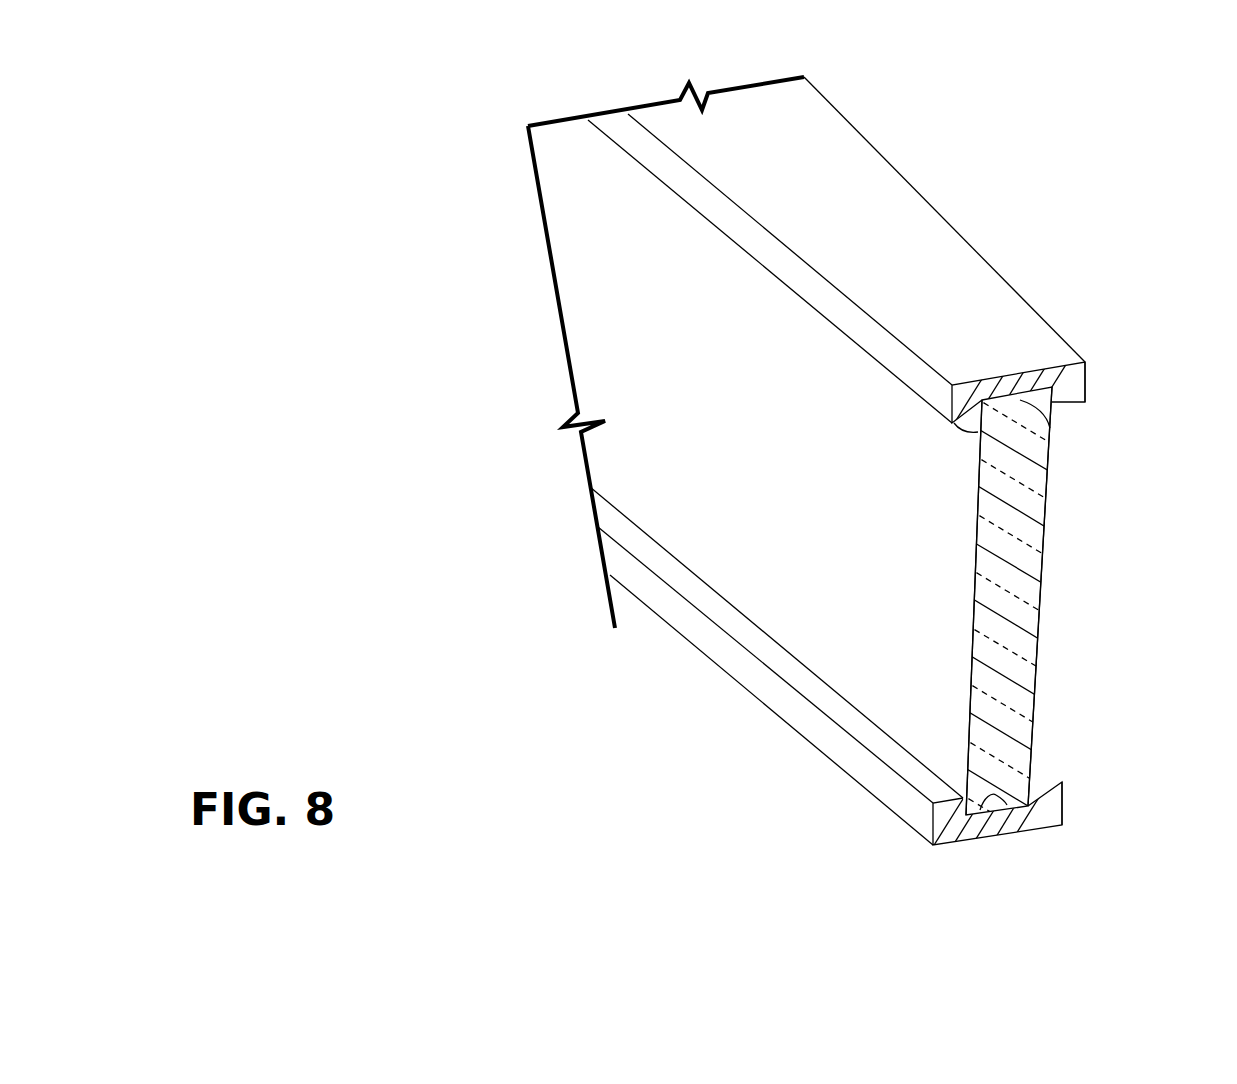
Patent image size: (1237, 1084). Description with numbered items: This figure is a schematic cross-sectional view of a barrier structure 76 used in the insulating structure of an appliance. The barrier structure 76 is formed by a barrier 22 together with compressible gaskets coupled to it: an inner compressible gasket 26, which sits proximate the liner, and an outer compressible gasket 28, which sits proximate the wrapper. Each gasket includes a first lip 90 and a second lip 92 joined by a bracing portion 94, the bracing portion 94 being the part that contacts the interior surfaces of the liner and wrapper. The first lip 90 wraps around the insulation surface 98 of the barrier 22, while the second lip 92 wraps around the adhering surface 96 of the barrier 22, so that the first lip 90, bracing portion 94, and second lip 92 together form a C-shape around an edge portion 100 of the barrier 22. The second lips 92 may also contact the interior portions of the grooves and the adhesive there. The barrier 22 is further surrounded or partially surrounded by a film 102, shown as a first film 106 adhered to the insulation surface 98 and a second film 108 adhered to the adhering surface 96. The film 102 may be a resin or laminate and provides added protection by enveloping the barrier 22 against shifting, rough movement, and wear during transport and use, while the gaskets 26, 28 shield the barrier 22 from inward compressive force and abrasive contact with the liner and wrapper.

The barrier 22 is at (597, 257).
The inner compressible gasket 26 is at (930, 270).
The outer compressible gasket 28 is at (748, 667).
The barrier structure 76 is at (950, 143).
The first lip 90 is at (958, 430).
The second lip 92 is at (1068, 405).
The bracing portion 94 is at (1023, 382).
The adhering surface 96 is at (1038, 718).
The insulation surface 98 is at (744, 438).
The edge portion 100 is at (1050, 422).
The film 102 is at (968, 502).
The first film 106 is at (975, 615).
The second film 108 is at (1040, 598).